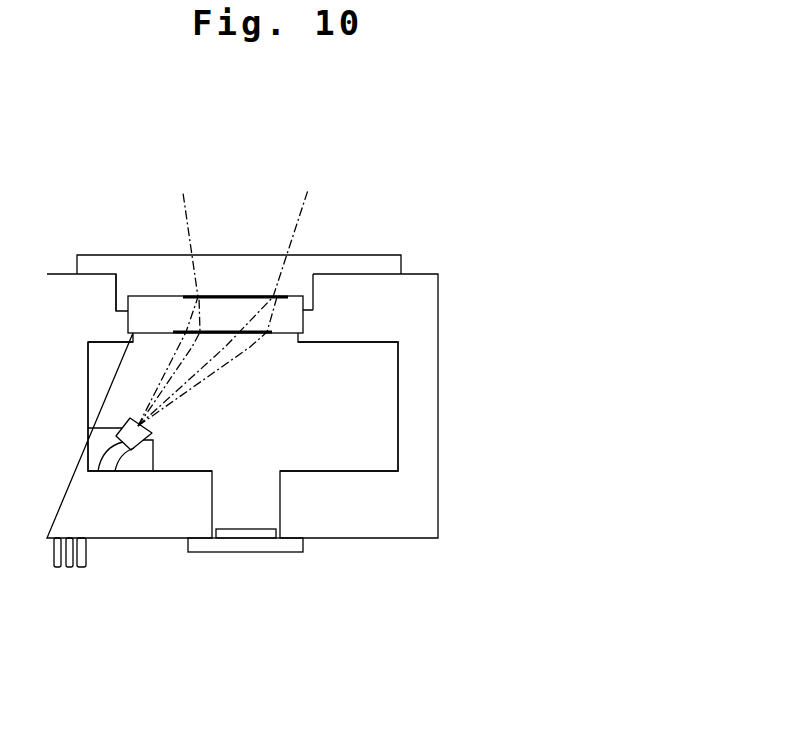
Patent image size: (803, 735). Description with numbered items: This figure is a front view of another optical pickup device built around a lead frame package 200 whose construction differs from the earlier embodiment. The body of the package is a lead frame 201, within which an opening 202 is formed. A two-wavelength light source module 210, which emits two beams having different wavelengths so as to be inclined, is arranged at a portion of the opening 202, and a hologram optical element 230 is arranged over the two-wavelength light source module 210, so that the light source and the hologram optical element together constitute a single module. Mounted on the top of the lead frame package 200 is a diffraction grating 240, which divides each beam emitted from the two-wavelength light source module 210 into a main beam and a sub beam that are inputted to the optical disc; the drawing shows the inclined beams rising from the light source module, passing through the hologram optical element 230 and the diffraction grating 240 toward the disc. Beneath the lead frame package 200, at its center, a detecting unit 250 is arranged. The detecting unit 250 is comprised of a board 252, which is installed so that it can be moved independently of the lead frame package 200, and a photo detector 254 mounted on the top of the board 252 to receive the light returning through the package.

The lead frame package 200 is at (297, 433).
The lead frame 201 is at (424, 300).
The opening 202 is at (351, 412).
The two-wavelength light source module 210 is at (137, 447).
The hologram optical element 230 is at (155, 313).
The diffraction grating 240 is at (353, 265).
The detecting unit 250 is at (298, 604).
The board 252 is at (265, 552).
The photo detector 254 is at (258, 528).